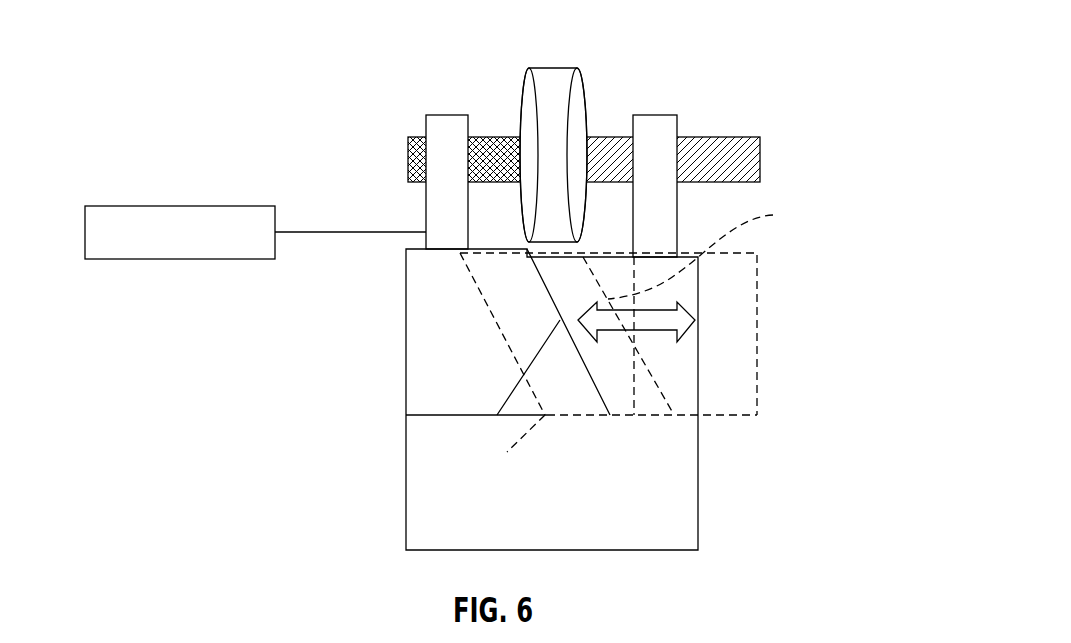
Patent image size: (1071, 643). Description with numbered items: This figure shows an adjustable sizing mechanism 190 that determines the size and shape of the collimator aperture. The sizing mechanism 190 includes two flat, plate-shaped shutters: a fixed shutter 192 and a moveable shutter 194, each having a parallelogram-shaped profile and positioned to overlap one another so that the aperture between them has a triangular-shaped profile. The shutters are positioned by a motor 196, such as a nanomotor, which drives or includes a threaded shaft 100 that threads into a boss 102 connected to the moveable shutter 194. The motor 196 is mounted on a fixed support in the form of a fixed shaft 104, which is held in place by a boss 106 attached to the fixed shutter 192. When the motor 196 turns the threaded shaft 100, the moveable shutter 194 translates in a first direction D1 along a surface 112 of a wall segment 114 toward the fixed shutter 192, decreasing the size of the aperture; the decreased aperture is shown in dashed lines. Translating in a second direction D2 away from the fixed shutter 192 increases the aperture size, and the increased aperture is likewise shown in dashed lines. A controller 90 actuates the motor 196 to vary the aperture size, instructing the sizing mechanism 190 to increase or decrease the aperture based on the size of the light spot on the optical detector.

The controller 90 is at (185, 205).
The threaded shaft 100 is at (750, 147).
The boss 102 is at (653, 127).
The fixed shaft 104 is at (498, 137).
The boss 106 is at (444, 221).
The motor 196 is at (553, 68).
The fixed shutter 192 is at (424, 328).
The surface 112 is at (483, 414).
The wall segment 114 is at (683, 492).
The adjustable sizing mechanism 190 is at (629, 374).
The moveable shutter 194 is at (682, 360).
The first direction D1 is at (595, 306).
The second direction D2 is at (695, 320).